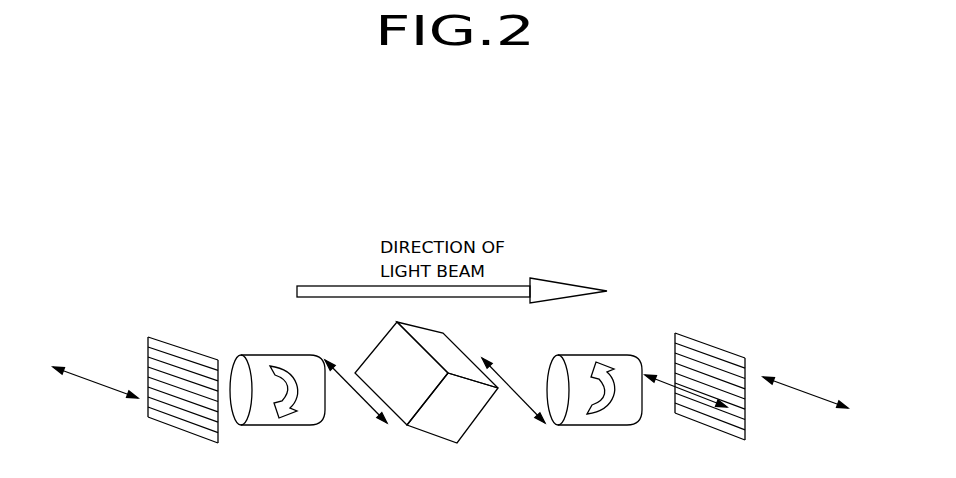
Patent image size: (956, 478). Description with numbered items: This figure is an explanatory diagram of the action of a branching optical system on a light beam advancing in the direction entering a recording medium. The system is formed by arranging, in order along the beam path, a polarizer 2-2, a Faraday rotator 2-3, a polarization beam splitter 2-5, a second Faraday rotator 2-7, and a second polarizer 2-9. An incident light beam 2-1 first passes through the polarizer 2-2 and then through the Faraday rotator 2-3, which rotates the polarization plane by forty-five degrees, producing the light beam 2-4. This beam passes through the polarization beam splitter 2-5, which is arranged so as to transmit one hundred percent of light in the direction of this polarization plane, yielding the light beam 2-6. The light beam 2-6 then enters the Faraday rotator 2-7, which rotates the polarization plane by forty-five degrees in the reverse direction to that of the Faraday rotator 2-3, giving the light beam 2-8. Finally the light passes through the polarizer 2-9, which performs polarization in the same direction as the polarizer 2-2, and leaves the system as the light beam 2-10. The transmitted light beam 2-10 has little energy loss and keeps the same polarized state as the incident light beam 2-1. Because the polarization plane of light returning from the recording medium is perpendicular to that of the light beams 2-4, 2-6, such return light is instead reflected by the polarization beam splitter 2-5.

The light beam 2-1 is at (93, 380).
The polarizer 2-2 is at (185, 350).
The Faraday rotator 2-3 is at (275, 355).
The light beam 2-4 is at (343, 373).
The polarization beam splitter 2-5 is at (377, 340).
The light beam 2-6 is at (508, 387).
The Faraday rotator 2-7 is at (595, 355).
The light beam 2-8 is at (667, 383).
The polarizer 2-9 is at (715, 347).
The light beam 2-10 is at (805, 388).